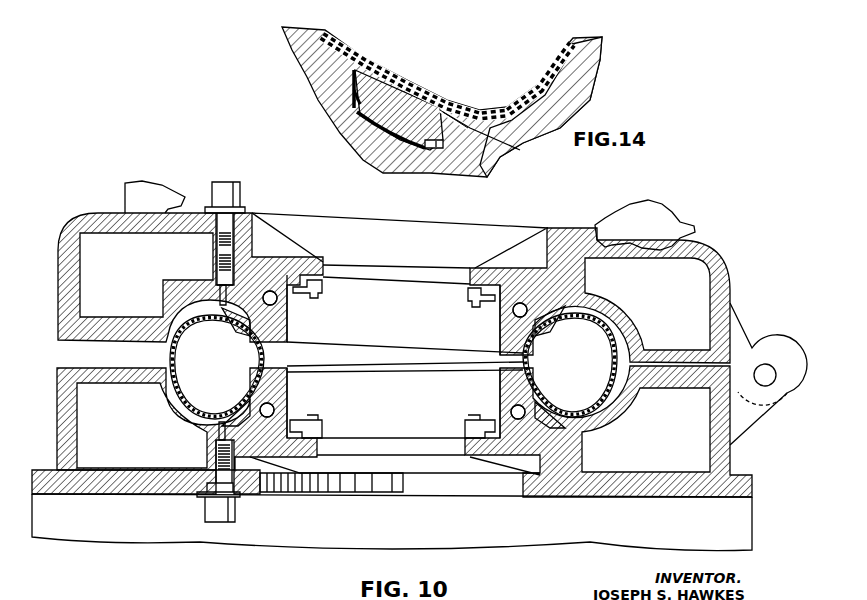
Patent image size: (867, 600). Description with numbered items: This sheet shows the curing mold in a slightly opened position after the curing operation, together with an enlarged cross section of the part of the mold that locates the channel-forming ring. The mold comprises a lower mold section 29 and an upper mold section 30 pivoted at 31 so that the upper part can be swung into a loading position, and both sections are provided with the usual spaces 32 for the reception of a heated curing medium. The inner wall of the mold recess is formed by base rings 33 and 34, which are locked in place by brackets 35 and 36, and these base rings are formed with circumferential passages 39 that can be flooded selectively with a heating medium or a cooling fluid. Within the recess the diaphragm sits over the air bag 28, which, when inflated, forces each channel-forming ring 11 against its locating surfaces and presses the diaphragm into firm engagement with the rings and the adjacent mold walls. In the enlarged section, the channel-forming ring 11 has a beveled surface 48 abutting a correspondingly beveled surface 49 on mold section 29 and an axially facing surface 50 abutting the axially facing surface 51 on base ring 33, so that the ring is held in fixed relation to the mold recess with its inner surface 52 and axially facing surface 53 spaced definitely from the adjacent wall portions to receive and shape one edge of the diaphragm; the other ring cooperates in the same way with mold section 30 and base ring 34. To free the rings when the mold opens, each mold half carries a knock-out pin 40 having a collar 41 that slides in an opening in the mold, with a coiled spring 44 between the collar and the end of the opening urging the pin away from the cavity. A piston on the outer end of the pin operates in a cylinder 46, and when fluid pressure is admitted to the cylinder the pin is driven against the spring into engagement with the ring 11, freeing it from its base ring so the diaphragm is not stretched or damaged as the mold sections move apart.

In FIG. 14, the channel-forming ring 11 is at (355, 112).
In FIG. 10, the channel-forming ring 11 is at (230, 333).
In FIG. 14, the air bag 28 is at (553, 57).
In FIG. 10, the air bag 28 is at (177, 368).
In FIG. 14, the lower mold section 29 is at (587, 77).
In FIG. 10, the lower mold section 29 is at (57, 392).
In FIG. 10, the upper mold section 30 is at (97, 223).
In FIG. 10, the pivot 31 is at (766, 362).
In FIG. 10, the spaces for heated curing medium 32 is at (88, 272).
In FIG. 14, the base ring 33 is at (305, 60).
In FIG. 10, the base ring 33 is at (287, 390).
In FIG. 10, the base ring 34 is at (288, 334).
In FIG. 10, the bracket 35 is at (314, 426).
In FIG. 10, the bracket 36 is at (322, 293).
In FIG. 10, the passages 39 is at (278, 302).
In FIG. 10, the knock-out pin 40 is at (220, 298).
In FIG. 10, the collar 41 is at (220, 247).
In FIG. 10, the coiled spring 44 is at (220, 262).
In FIG. 10, the cylinder 46 is at (236, 188).
In FIG. 14, the beveled surface 48 is at (445, 107).
In FIG. 14, the beveled surface 49 is at (443, 135).
In FIG. 14, the axially facing surface 50 is at (425, 145).
In FIG. 14, the axially facing surface 51 is at (432, 143).
In FIG. 14, the inner surface 52 is at (358, 93).
In FIG. 14, the axially facing surface 53 is at (367, 140).